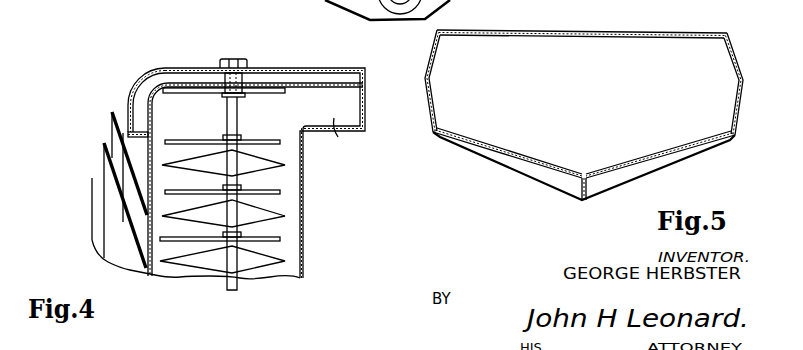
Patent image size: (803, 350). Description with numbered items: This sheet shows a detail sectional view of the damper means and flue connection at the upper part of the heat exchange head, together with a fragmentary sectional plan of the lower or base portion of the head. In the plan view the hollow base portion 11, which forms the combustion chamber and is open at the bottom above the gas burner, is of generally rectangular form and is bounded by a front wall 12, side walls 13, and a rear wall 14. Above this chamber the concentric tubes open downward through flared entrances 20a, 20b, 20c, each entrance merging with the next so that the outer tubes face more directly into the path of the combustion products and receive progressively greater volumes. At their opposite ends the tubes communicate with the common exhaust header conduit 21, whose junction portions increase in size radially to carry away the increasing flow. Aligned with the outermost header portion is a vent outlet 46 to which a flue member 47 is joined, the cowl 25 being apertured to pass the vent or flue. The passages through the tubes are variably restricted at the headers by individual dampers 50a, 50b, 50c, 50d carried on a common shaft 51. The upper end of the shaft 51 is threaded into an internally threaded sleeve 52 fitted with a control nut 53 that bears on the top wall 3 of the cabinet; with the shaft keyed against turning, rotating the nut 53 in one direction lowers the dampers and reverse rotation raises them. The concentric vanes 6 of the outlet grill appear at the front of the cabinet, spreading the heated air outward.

In FIG. 4, the top wall 3 is at (338, 67).
In FIG. 4, the concentric vanes 6 is at (93, 177).
In FIG. 5, the hollow base portion 11 is at (620, 164).
In FIG. 5, the front wall 12 is at (598, 30).
In FIG. 5, the side walls 13 is at (428, 56).
In FIG. 5, the rear wall 14 is at (520, 170).
In FIG. 4, the tube entrance 20a is at (192, 162).
In FIG. 4, the tube entrance 20b is at (182, 209).
In FIG. 4, the tube entrance 20c is at (200, 265).
In FIG. 4, the exhaust header conduit 21 is at (143, 189).
In FIG. 4, the cowl member 25 is at (333, 86).
In FIG. 4, the vent outlet 46 is at (137, 98).
In FIG. 4, the flue member 47 is at (343, 137).
In FIG. 4, the damper 50a is at (205, 102).
In FIG. 4, the damper 50b is at (205, 136).
In FIG. 4, the damper 50c is at (257, 192).
In FIG. 4, the damper 50d is at (257, 248).
In FIG. 4, the common shaft 51 is at (230, 293).
In FIG. 4, the internally threaded sleeve 52 is at (244, 76).
In FIG. 4, the control nut 53 is at (222, 62).